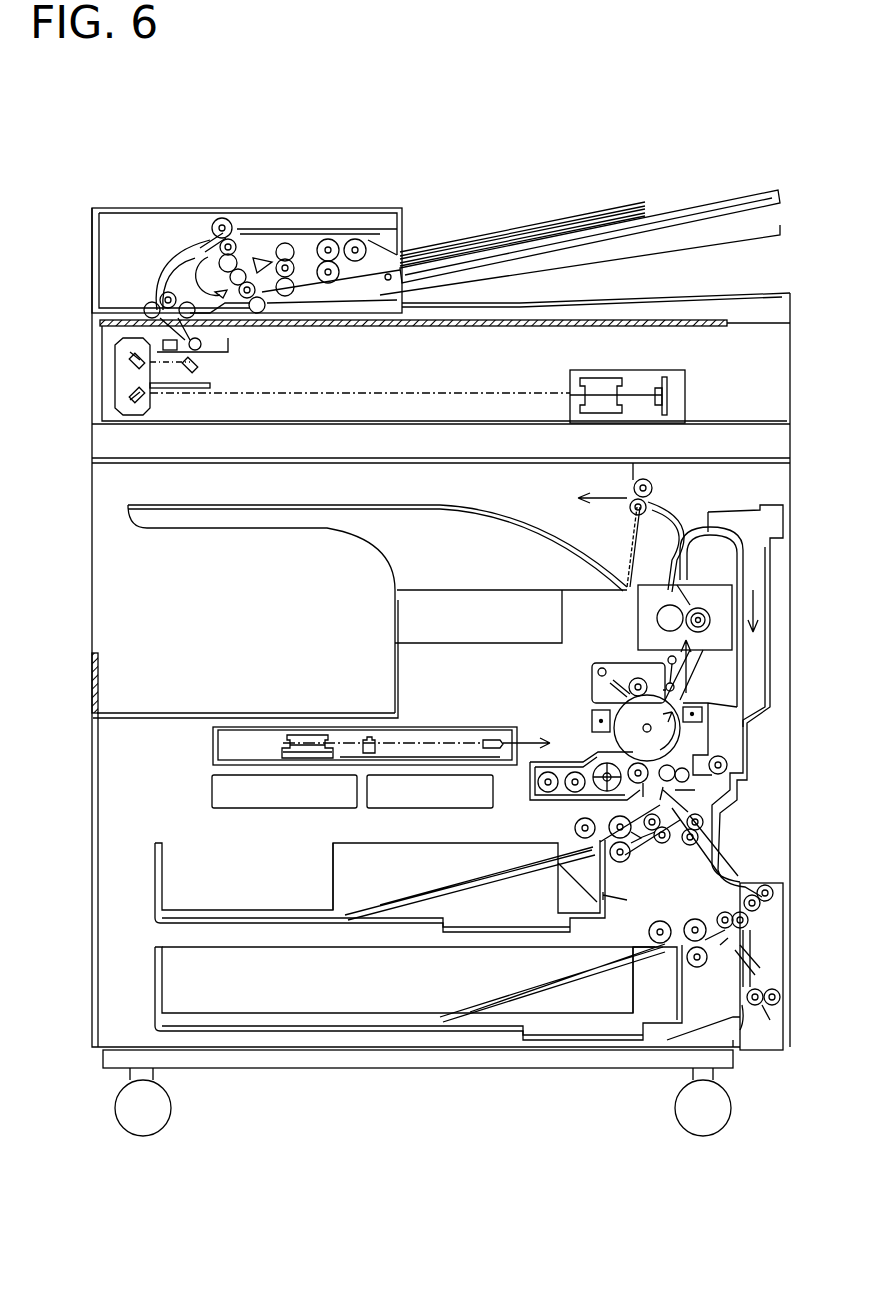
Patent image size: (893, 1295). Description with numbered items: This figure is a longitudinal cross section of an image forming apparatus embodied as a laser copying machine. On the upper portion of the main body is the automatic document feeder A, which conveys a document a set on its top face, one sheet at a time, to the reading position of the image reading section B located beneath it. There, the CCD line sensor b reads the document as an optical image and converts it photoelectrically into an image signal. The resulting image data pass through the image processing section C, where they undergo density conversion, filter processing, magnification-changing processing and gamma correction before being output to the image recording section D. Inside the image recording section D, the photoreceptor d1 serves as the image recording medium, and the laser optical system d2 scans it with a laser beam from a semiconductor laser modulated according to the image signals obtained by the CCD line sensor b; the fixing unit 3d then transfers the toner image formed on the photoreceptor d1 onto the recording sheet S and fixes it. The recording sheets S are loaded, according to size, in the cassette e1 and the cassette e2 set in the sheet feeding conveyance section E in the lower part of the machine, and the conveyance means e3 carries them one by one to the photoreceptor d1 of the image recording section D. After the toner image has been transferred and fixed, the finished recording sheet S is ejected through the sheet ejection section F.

The automatic document feeder A is at (691, 200).
The document a is at (553, 208).
The image reading section B is at (415, 342).
The CCD line sensor b is at (668, 392).
The image processing section C is at (413, 617).
The image recording section D is at (602, 708).
The photoreceptor d1 is at (592, 683).
The laser optical system d2 is at (198, 750).
The sheet feeding conveyance section E is at (128, 846).
The cassette e1 is at (155, 895).
The cassette e2 is at (155, 990).
The conveyance means e3 is at (612, 809).
The sheet ejection section F is at (652, 483).
The recording sheet S is at (425, 885).
The fixing unit 3d is at (638, 618).